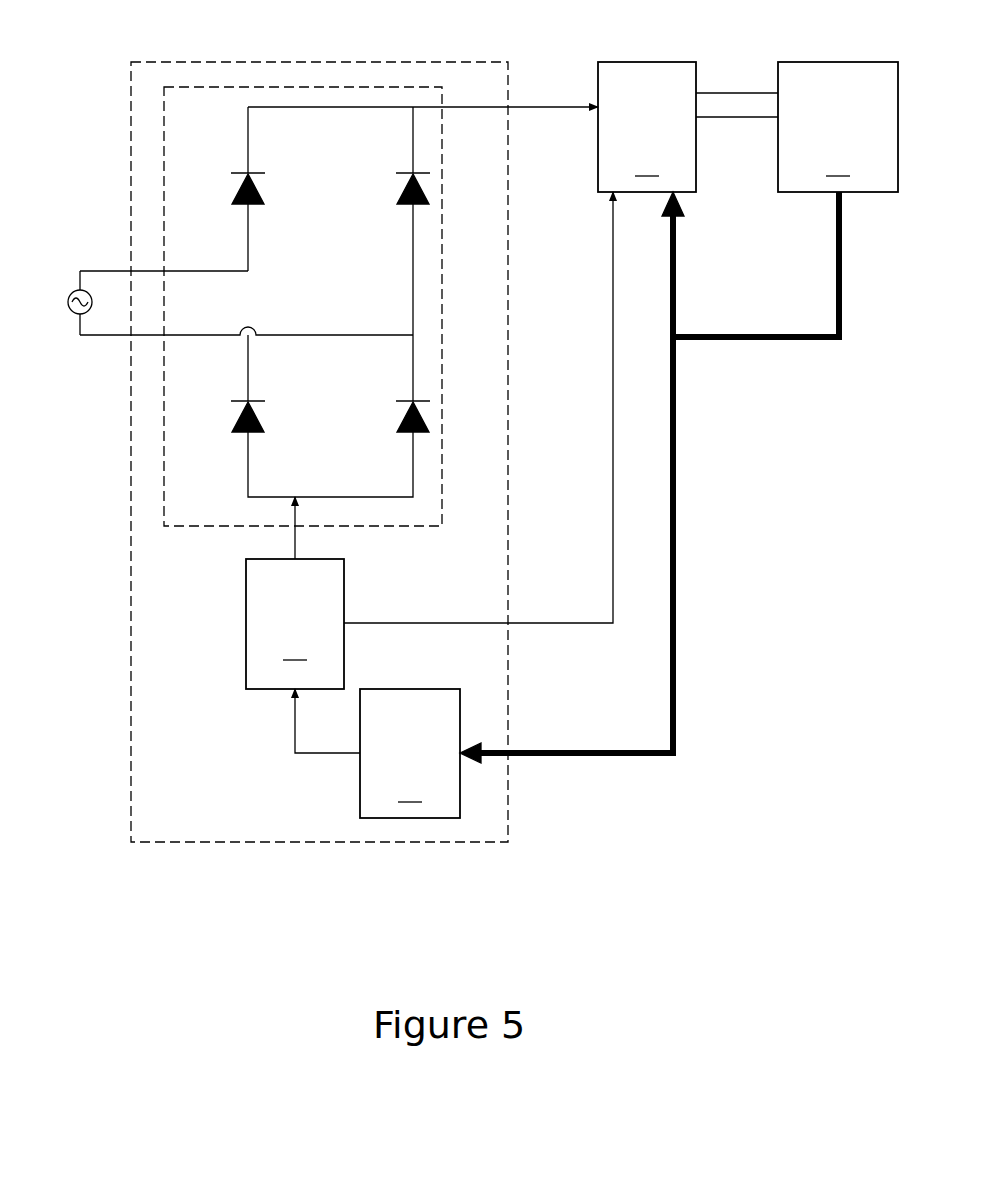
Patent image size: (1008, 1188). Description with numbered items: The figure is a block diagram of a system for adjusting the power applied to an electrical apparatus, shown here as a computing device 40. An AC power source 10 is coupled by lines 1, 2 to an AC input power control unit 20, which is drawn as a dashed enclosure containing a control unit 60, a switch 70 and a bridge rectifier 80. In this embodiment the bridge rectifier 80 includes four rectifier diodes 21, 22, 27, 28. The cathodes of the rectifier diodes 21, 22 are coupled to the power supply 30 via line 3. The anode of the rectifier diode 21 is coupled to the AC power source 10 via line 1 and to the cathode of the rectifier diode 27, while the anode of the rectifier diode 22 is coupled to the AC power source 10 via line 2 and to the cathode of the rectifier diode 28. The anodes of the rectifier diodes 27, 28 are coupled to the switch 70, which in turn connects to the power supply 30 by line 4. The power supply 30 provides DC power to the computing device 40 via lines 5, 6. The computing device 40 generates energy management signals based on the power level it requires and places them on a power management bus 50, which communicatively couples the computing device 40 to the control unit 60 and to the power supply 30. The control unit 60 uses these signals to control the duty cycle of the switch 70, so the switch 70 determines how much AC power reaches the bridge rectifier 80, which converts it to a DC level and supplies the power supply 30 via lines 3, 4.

The line 1 is at (115, 270).
The line 2 is at (115, 336).
The line 3 is at (516, 105).
The line 4 is at (612, 305).
The line 5 is at (714, 93).
The line 6 is at (712, 118).
The AC power source 10 is at (76, 291).
The AC input power control unit 20 is at (386, 62).
The rectifier diode 21 is at (237, 171).
The rectifier diode 22 is at (402, 171).
The rectifier diode 27 is at (237, 399).
The rectifier diode 28 is at (402, 399).
The power supply 30 is at (647, 127).
The computing device 40 is at (838, 127).
The power management bus 50 is at (818, 341).
The control unit 60 is at (377, 753).
The switch 70 is at (295, 593).
The bridge rectifier 80 is at (202, 87).